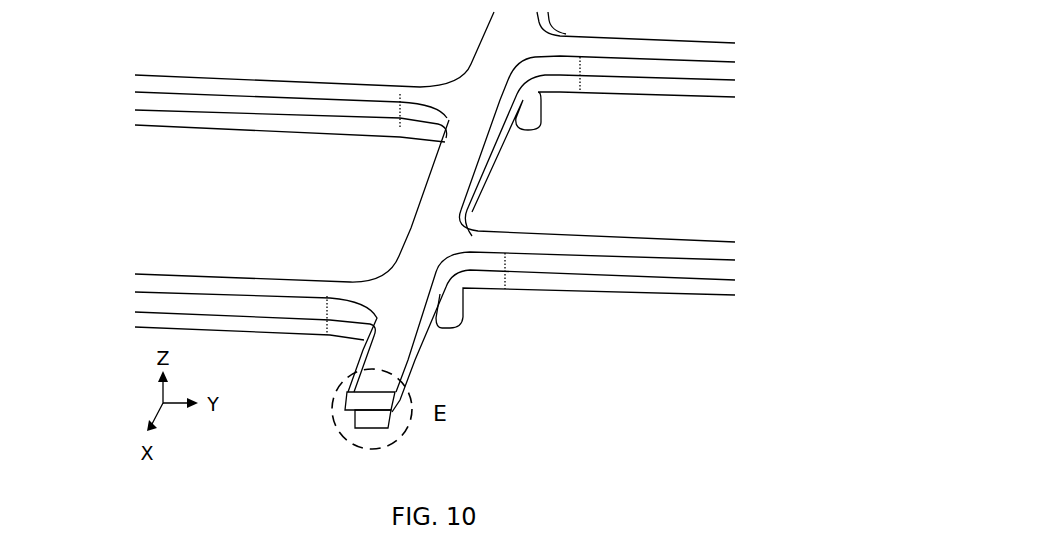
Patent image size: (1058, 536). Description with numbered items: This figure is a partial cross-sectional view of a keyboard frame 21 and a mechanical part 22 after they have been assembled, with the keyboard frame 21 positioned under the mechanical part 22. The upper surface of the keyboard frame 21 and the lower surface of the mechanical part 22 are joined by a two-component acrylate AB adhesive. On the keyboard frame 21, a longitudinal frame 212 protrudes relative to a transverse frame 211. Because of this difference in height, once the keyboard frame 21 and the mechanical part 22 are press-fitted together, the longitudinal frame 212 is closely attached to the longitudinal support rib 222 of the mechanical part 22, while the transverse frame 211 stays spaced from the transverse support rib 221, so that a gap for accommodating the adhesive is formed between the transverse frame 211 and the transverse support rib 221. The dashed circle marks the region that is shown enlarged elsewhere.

The mechanical part 22 is at (287, 69).
The keyboard frame 21 is at (291, 150).
The longitudinal support rib 222 is at (592, 265).
The longitudinal frame 212 is at (639, 283).
The transverse support rib 221 is at (350, 398).
The transverse frame 211 is at (356, 420).